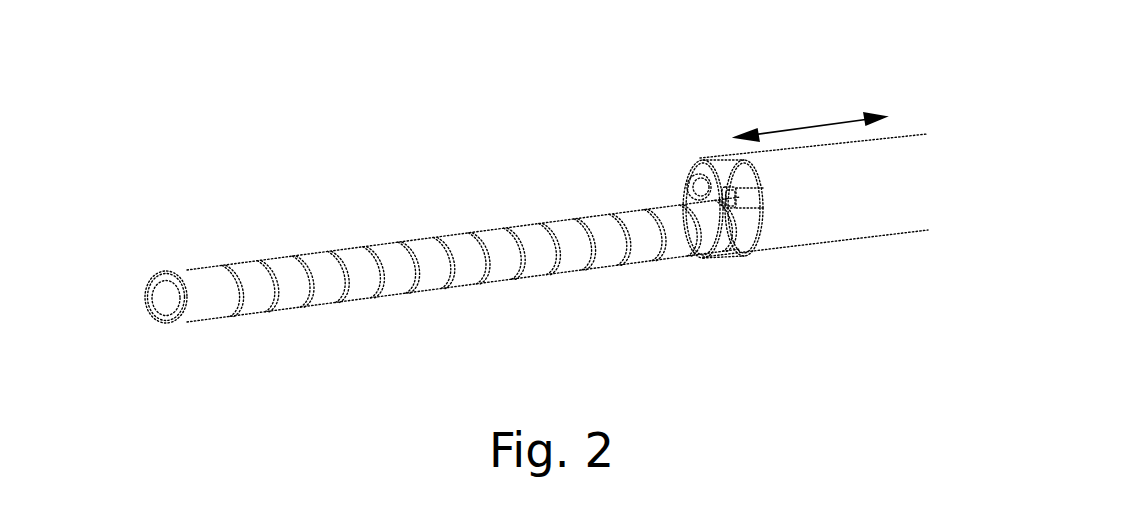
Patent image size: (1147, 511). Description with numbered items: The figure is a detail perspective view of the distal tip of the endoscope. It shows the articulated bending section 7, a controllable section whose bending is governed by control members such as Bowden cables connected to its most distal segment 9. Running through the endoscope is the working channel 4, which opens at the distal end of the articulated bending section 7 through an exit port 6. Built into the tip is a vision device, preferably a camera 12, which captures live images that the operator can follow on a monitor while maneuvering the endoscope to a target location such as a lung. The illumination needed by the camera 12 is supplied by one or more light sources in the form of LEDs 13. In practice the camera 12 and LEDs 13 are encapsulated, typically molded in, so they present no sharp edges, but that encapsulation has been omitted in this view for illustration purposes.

The working channel 4 is at (182, 299).
The exit port 6 is at (175, 297).
The articulated bending section 7 is at (383, 189).
The most distal segment 9 is at (187, 268).
The camera 12 is at (696, 183).
The LEDs 13 is at (683, 203).